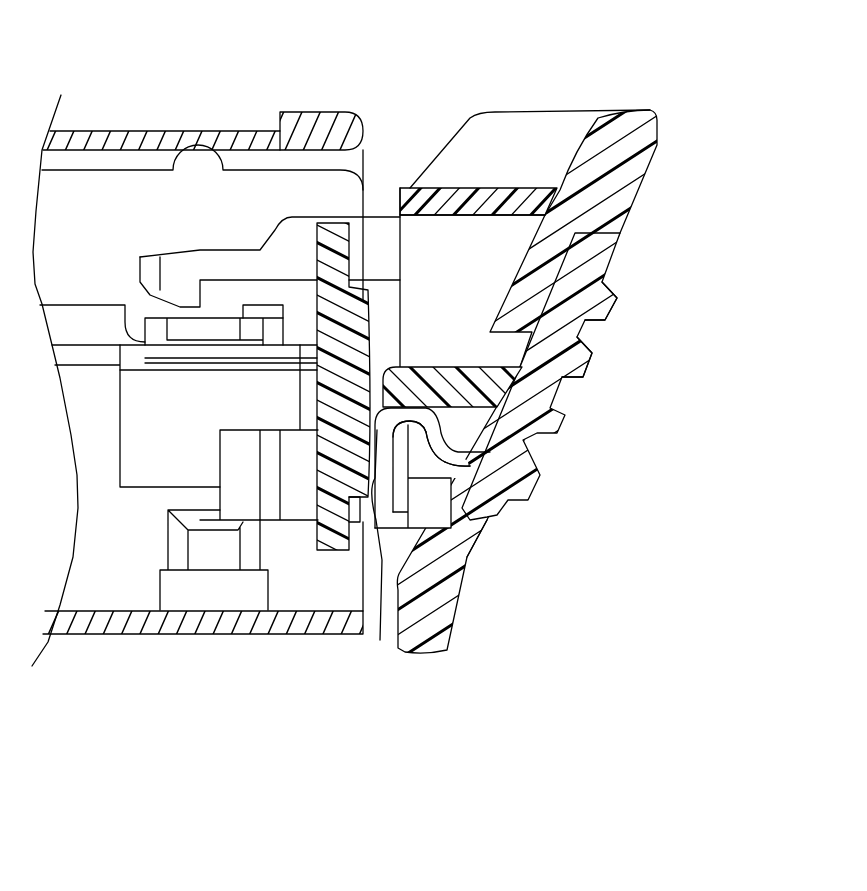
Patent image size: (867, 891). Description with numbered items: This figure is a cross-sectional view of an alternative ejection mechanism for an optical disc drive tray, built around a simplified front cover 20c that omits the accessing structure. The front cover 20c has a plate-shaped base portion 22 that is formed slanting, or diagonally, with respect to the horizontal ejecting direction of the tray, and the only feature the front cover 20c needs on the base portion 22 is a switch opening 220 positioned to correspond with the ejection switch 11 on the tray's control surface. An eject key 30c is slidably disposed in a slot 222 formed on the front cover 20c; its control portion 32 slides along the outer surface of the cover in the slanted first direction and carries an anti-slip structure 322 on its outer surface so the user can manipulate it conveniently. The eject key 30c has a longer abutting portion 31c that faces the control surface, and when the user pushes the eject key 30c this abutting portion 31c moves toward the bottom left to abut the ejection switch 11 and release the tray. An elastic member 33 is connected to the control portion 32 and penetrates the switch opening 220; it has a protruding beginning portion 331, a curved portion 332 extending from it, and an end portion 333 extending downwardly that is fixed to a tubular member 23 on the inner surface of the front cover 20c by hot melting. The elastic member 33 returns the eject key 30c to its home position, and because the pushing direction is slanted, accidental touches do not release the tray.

The ejection switch 11 is at (330, 386).
The front cover 20c is at (667, 100).
The base portion 22 is at (635, 183).
The switch opening 220 is at (486, 361).
The slot 222 is at (468, 530).
The tubular member 23 is at (380, 640).
The eject key 30c is at (620, 280).
The abutting portion 31c is at (430, 388).
The control portion 32 is at (570, 336).
The anti-slip structure 322 is at (608, 305).
The elastic member 33 is at (630, 430).
The beginning portion 331 is at (385, 460).
The curved portion 332 is at (398, 497).
The end portion 333 is at (490, 510).